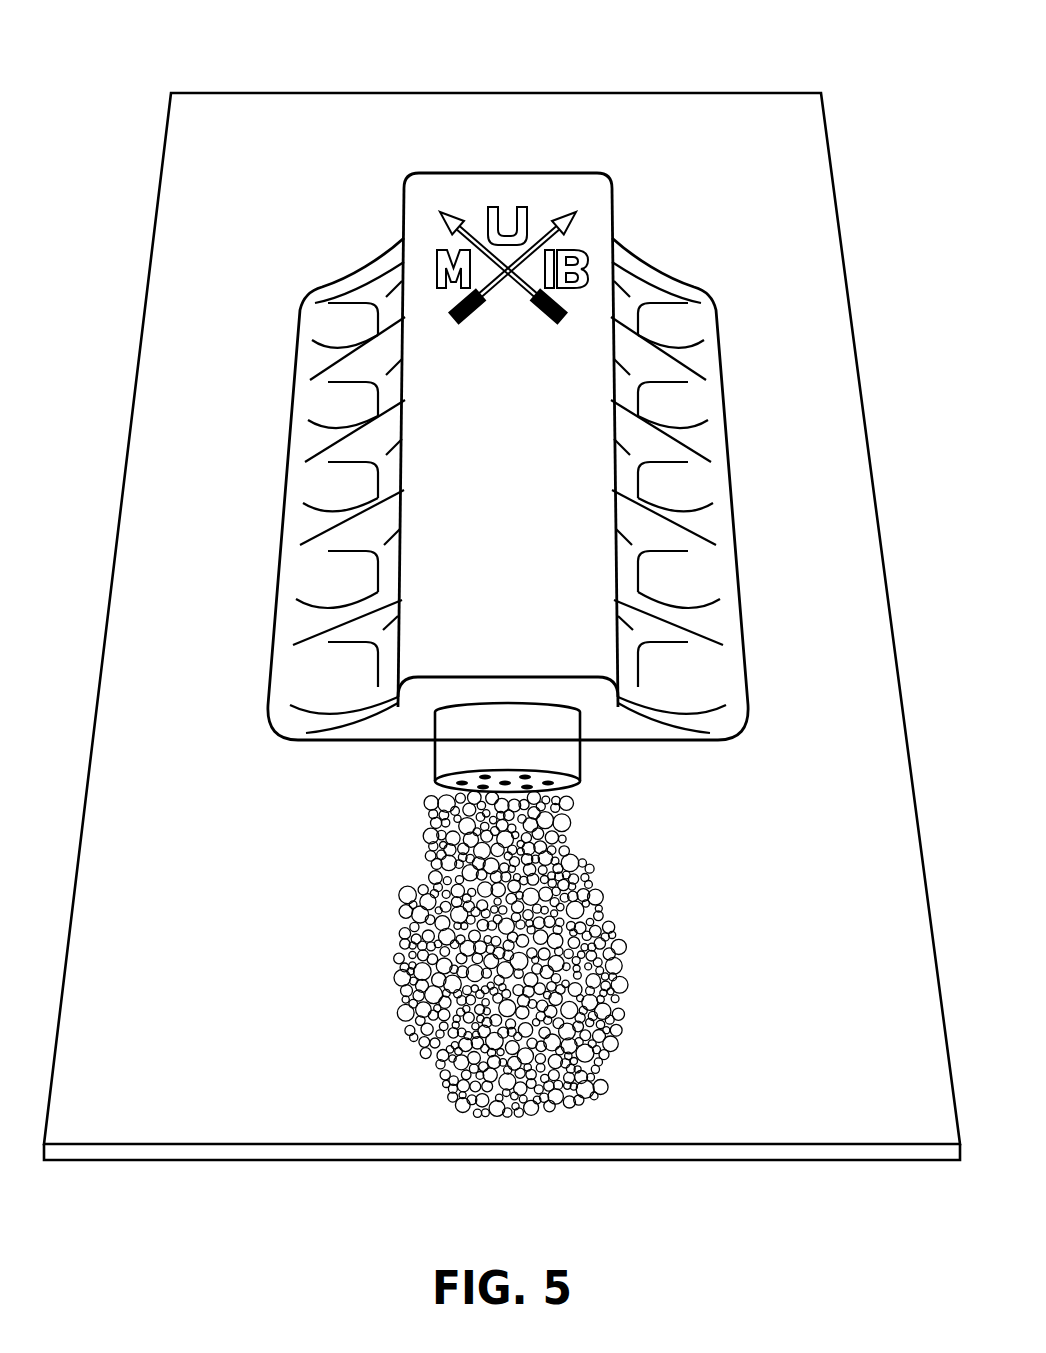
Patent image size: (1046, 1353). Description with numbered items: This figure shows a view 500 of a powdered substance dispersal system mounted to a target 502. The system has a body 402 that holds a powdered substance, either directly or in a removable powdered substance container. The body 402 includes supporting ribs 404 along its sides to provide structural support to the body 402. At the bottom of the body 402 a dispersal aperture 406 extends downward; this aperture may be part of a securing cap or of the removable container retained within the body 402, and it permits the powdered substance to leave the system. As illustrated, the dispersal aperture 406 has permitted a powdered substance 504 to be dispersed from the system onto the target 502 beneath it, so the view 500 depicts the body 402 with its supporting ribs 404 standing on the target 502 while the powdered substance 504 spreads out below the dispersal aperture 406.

The view 500 is at (502, 614).
The body 402 is at (553, 188).
The supporting ribs 404 is at (327, 360).
The dispersal aperture 406 is at (467, 743).
The target 502 is at (247, 1108).
The powdered substance 504 is at (417, 922).